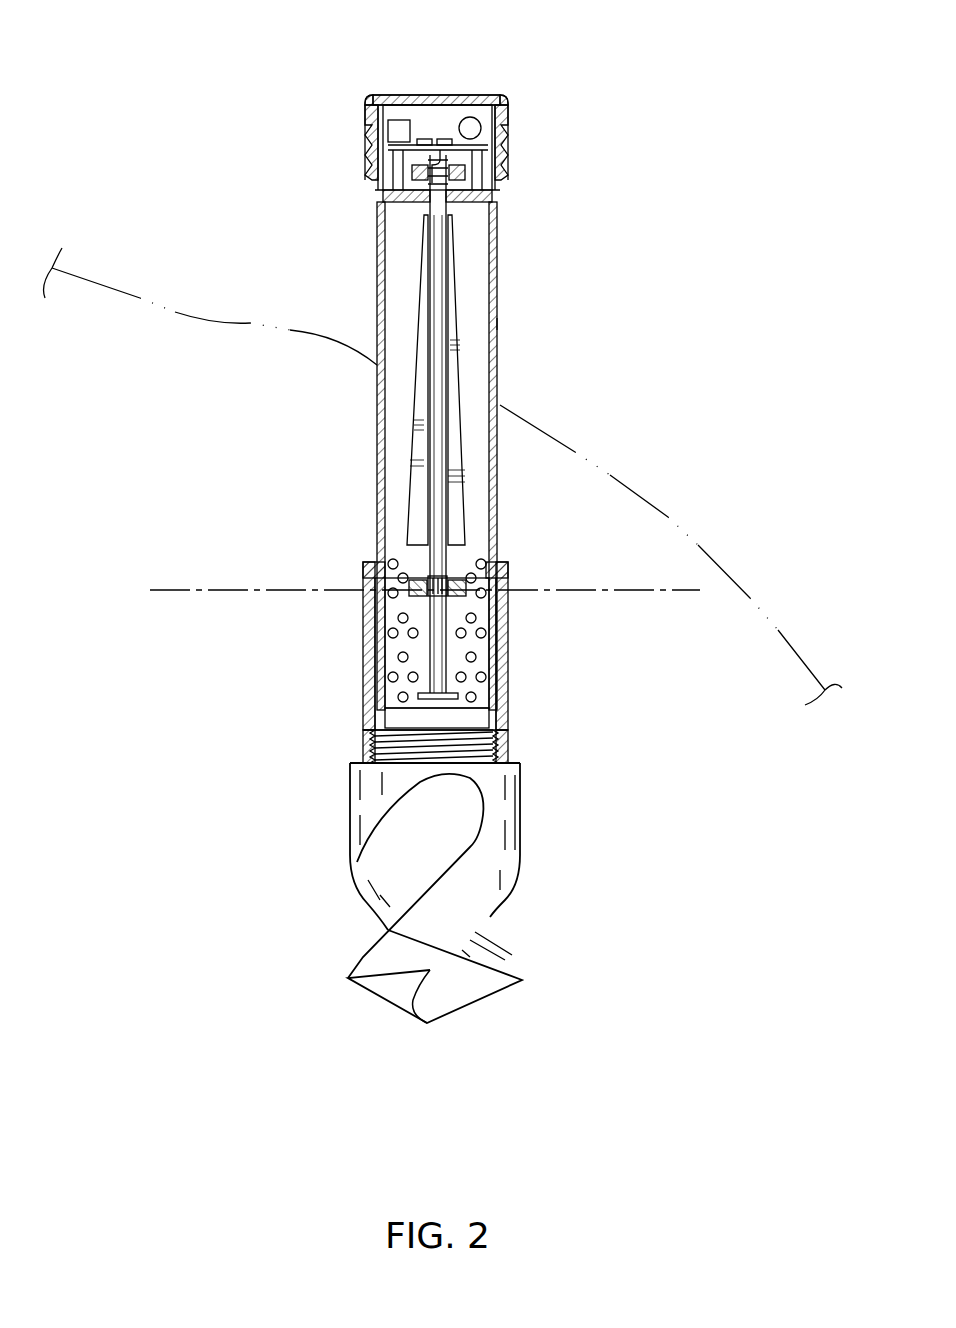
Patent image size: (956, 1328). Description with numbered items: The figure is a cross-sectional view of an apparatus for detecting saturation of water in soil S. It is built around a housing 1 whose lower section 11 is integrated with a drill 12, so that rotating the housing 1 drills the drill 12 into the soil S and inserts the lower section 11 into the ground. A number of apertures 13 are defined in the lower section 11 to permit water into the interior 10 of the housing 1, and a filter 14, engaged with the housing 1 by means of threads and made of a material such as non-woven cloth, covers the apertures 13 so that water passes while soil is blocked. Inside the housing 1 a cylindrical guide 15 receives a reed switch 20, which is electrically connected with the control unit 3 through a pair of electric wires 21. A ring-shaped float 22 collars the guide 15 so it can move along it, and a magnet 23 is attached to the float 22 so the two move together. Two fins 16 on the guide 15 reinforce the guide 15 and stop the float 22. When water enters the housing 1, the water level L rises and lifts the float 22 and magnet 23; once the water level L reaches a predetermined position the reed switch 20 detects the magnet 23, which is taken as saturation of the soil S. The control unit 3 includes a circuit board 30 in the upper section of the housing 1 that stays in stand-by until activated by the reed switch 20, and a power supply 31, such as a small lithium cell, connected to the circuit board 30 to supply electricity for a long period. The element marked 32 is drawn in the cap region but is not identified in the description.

The housing 1 is at (506, 306).
The control unit 3 is at (425, 122).
The interior 10 is at (395, 283).
The lower section 11 is at (372, 745).
The drill 12 is at (388, 957).
The apertures 13 is at (400, 697).
The filter 14 is at (370, 668).
The guide 15 is at (453, 378).
The fins 16 is at (458, 492).
The reed switch 20 is at (420, 585).
The electric wires 21 is at (440, 248).
The float 22 is at (462, 592).
The magnet 23 is at (452, 585).
The circuit board 30 is at (457, 147).
The power supply 31 is at (473, 130).
The switch 32 is at (393, 125).
The soil S is at (622, 537).
The water level L is at (160, 600).